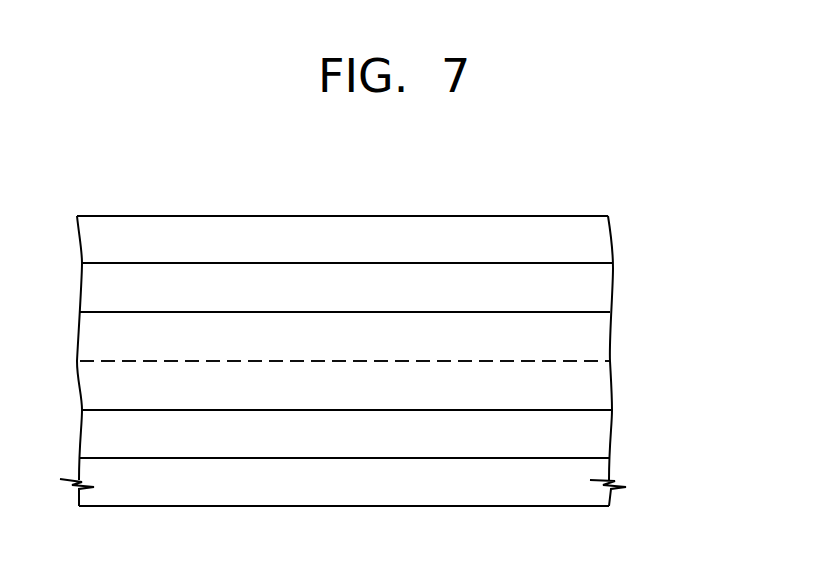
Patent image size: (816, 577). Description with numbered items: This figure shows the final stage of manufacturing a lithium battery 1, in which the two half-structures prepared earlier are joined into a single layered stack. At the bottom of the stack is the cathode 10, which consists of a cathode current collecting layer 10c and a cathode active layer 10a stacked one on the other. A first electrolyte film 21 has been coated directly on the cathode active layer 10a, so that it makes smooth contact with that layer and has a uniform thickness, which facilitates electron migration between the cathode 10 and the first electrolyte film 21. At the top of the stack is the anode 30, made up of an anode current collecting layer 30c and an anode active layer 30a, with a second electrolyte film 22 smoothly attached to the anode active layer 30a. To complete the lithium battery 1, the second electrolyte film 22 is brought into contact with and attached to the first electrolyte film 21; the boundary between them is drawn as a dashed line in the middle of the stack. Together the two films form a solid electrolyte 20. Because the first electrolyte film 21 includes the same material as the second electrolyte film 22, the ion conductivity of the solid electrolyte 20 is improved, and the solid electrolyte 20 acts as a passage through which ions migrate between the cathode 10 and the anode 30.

The lithium battery 1 is at (522, 172).
The cathode 10 is at (406, 458).
The cathode active layer 10a is at (597, 437).
The cathode current collecting layer 10c is at (597, 475).
The solid electrolyte 20 is at (400, 361).
The first electrolyte film 21 is at (378, 385).
The second electrolyte film 22 is at (593, 342).
The anode 30 is at (405, 264).
The anode active layer 30a is at (597, 294).
The anode current collecting layer 30c is at (597, 244).